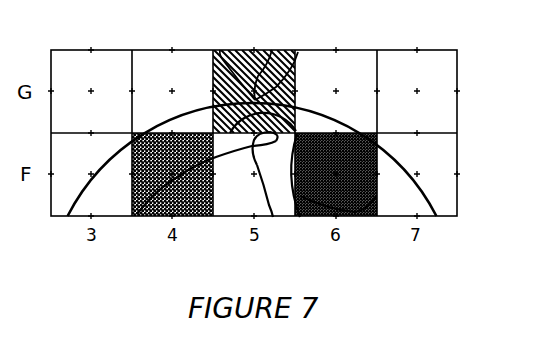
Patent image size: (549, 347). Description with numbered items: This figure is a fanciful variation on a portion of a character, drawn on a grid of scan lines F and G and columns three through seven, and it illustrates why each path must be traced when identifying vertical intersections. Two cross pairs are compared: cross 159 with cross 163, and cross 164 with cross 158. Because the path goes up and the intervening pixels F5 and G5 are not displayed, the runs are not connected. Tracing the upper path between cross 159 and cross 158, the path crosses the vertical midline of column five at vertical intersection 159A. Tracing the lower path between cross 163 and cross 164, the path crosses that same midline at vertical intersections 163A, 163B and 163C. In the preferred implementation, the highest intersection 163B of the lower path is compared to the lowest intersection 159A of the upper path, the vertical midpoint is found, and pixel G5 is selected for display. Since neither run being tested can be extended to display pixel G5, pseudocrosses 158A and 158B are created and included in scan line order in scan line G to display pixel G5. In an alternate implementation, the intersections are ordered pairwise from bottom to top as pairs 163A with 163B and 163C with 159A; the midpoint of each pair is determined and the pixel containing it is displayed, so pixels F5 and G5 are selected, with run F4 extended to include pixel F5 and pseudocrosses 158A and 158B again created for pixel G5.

The cross 158 is at (418, 156).
The pseudocross 158A is at (298, 52).
The pseudocross 158B is at (220, 50).
The cross 159 is at (75, 156).
The vertical intersection 159A is at (272, 50).
The cross 163 is at (178, 181).
The vertical intersection 163A is at (256, 161).
The vertical intersection 163B is at (273, 217).
The vertical intersection 163C is at (295, 105).
The cross 164 is at (300, 217).